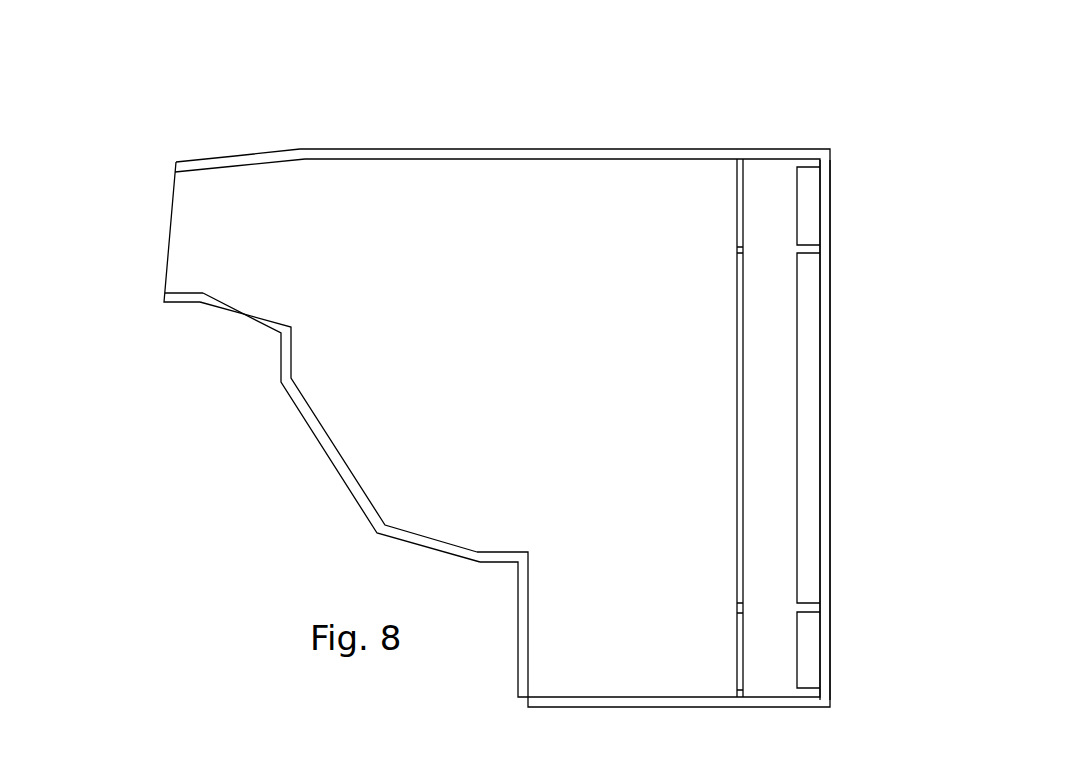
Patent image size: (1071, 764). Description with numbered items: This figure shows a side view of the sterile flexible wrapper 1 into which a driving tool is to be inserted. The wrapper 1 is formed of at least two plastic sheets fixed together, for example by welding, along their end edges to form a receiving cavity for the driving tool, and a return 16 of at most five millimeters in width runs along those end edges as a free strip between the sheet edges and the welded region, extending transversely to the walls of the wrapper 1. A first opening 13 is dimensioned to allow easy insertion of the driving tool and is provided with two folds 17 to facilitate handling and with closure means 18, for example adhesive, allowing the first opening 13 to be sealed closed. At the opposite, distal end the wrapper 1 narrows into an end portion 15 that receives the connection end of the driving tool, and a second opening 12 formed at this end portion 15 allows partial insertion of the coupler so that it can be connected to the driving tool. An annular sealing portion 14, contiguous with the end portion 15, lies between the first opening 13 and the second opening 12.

The sterile flexible wrapper 1 is at (563, 128).
The second opening 12 is at (159, 230).
The first opening 13 is at (837, 446).
The annular sealing portion 14 is at (258, 156).
The end portion 15 is at (196, 157).
The return 16 is at (432, 148).
The folds 17 is at (740, 548).
The closure means 18 is at (797, 192).